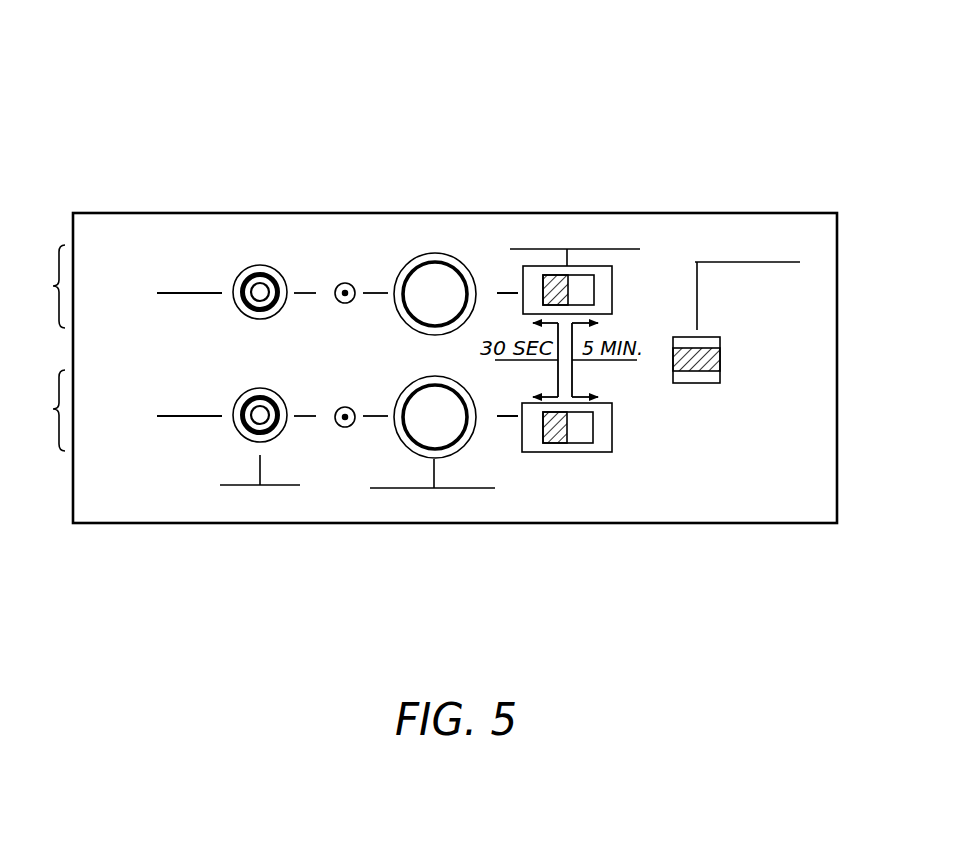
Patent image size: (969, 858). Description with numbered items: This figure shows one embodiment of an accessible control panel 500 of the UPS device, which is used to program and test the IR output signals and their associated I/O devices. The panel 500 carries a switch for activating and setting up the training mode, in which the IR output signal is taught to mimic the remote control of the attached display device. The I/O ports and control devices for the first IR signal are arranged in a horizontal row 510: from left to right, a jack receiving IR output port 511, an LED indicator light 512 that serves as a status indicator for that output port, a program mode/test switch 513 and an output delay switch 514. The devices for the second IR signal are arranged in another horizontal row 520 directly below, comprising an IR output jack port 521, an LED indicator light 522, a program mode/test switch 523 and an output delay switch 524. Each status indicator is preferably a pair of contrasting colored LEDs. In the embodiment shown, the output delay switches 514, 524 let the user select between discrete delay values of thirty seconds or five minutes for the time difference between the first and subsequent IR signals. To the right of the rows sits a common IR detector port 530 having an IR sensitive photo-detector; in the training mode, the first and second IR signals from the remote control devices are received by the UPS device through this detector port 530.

The control panel 500 is at (140, 82).
The horizontal row 510 is at (265, 286).
The IR output port 511 is at (260, 266).
The LED indicator light 512 is at (343, 282).
The program mode/test switch 513 is at (435, 254).
The output delay switch 514 is at (613, 292).
The horizontal row 520 is at (265, 410).
The IR output jack port 521 is at (235, 425).
The LED indicator light 522 is at (343, 427).
The program mode/test switch 523 is at (467, 430).
The output delay switch 524 is at (613, 432).
The IR detector port 530 is at (720, 357).